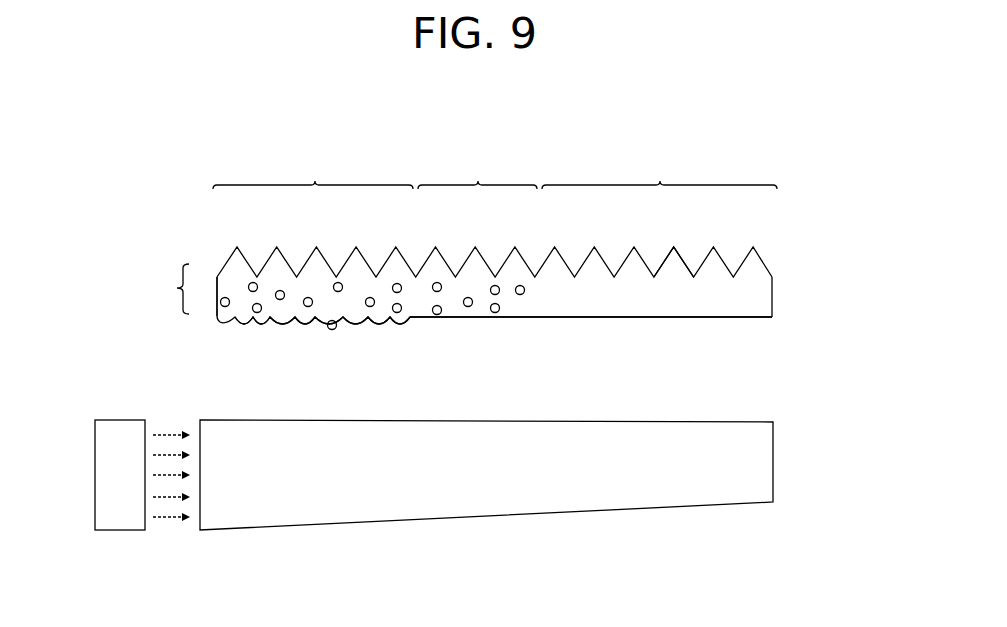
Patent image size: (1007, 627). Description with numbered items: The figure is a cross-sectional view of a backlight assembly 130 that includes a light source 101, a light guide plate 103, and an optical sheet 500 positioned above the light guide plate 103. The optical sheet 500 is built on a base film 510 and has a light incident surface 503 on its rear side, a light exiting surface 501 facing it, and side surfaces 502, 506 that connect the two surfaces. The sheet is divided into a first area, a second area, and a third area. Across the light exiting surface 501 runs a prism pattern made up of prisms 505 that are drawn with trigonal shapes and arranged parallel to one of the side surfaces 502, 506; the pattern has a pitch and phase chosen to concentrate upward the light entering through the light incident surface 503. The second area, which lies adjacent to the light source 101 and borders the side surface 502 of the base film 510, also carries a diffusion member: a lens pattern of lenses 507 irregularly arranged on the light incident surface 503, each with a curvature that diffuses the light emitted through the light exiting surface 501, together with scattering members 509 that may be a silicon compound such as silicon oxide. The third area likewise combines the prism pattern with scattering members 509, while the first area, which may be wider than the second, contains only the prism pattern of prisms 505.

The backlight assembly 130 is at (418, 140).
The optical sheet 500 is at (728, 306).
The light exiting surface 501 is at (766, 263).
The side surface 502 is at (215, 275).
The light incident surface 503 is at (651, 319).
The prism 505 is at (688, 262).
The side surface 506 is at (772, 293).
The lens 507 is at (253, 315).
The scattering member 509 is at (330, 327).
The base film 510 is at (161, 289).
The light source 101 is at (120, 530).
The light guide plate 103 is at (769, 462).